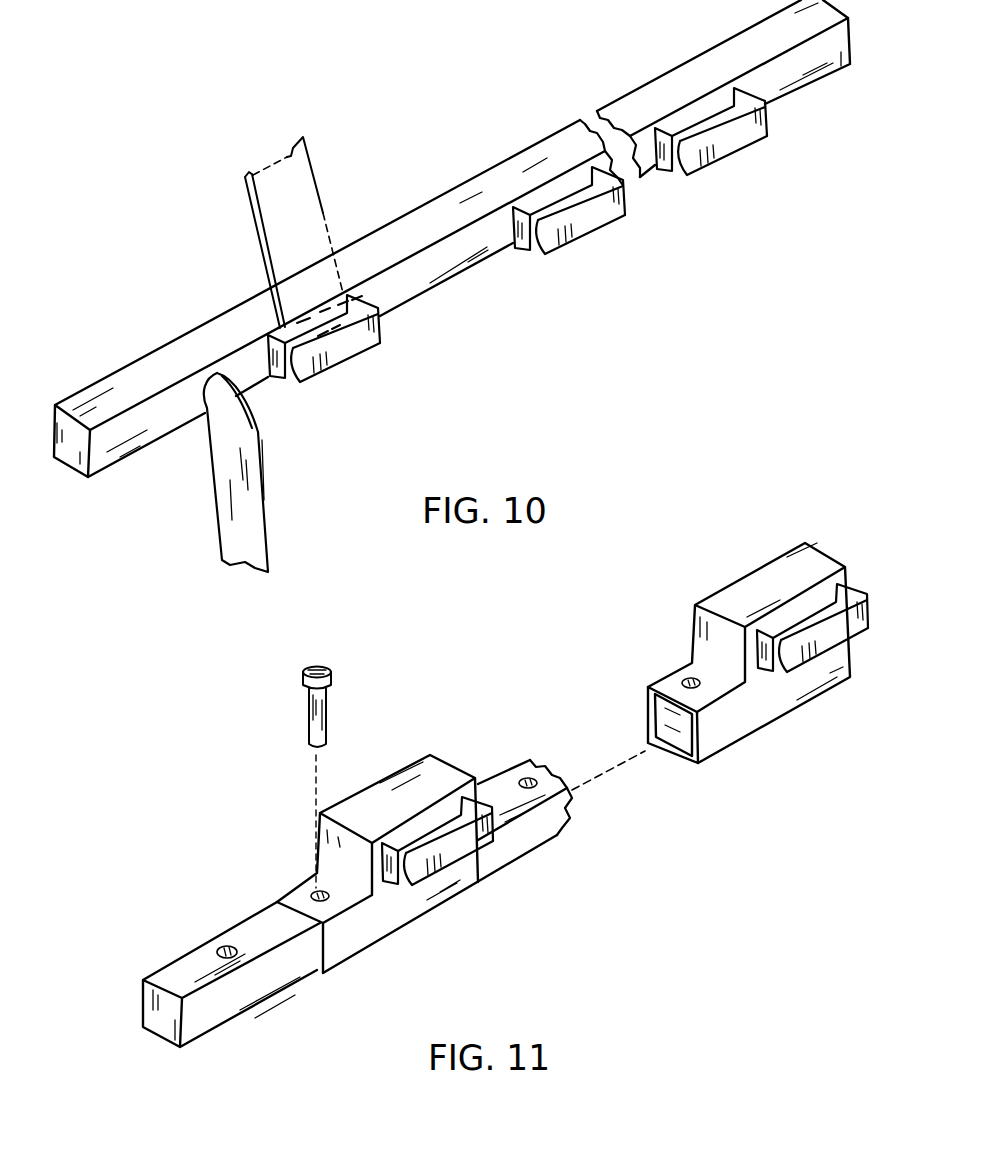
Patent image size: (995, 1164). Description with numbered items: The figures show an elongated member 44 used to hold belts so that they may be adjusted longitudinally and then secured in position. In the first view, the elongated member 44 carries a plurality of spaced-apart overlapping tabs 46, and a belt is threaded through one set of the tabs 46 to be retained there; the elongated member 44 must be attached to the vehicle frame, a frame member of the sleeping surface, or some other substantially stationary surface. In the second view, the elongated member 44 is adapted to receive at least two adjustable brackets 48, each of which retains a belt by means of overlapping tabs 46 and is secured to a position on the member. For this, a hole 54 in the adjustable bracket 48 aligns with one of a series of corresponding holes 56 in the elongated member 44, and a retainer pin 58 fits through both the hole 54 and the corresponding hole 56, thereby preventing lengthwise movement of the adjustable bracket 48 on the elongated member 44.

In FIG. 10, the elongated member 44 is at (450, 210).
In FIG. 10, the overlapping tabs 46 is at (343, 355).
In FIG. 11, the overlapping tabs 46 is at (477, 838).
In FIG. 11, the adjustable bracket 48 is at (733, 730).
In FIG. 11, the hole 54 is at (687, 678).
In FIG. 11, the corresponding holes 56 is at (222, 948).
In FIG. 11, the retainer pin 58 is at (307, 706).